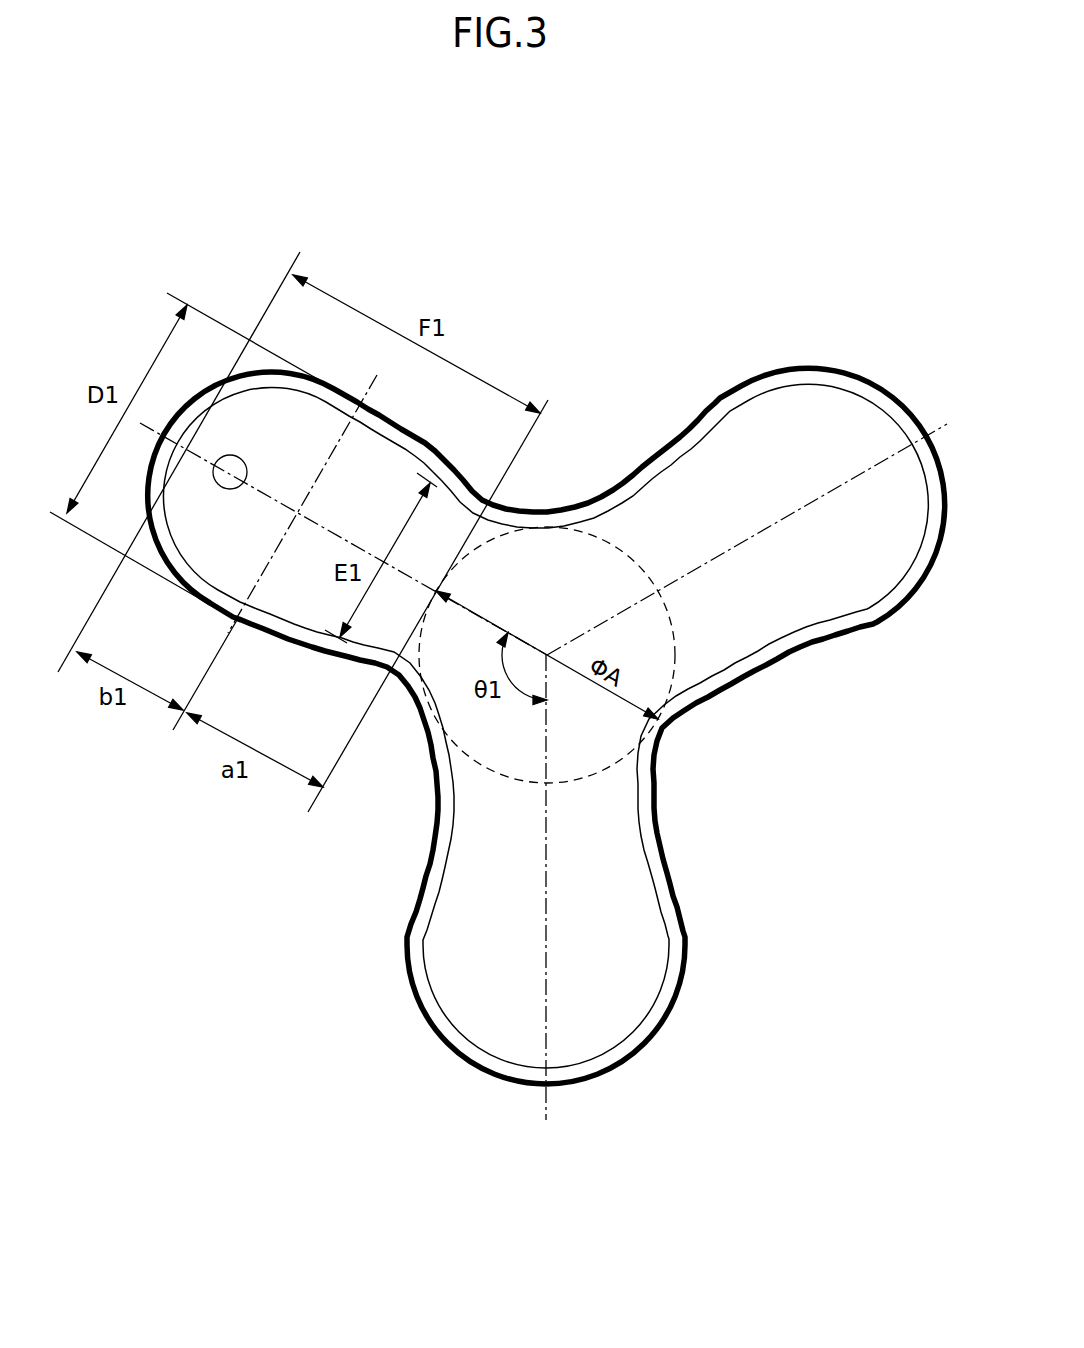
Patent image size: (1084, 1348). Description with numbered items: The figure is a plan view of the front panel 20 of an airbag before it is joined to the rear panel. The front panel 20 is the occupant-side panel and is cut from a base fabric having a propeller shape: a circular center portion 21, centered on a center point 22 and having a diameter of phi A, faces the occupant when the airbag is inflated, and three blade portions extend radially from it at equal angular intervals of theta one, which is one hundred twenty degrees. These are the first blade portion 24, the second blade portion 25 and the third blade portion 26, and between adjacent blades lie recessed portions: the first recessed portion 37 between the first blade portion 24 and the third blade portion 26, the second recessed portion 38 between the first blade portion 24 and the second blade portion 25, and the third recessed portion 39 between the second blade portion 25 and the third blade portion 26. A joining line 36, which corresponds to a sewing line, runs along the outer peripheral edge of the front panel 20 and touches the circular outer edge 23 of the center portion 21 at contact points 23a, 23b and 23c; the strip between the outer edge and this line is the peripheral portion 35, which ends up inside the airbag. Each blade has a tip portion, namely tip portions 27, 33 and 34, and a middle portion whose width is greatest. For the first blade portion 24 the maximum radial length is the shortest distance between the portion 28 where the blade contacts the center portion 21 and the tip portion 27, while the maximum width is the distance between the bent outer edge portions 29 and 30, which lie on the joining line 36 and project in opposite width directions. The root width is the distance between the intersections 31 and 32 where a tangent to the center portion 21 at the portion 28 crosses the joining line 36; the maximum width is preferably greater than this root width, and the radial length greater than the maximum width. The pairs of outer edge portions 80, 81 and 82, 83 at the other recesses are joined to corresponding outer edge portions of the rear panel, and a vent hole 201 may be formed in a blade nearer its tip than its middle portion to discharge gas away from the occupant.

The front panel 20 is at (240, 262).
The center portion 21 is at (602, 587).
The center point 22 is at (547, 652).
The circular outer edge 23 is at (628, 556).
The contact point 23a is at (550, 522).
The contact point 23b is at (435, 720).
The contact point 23c is at (662, 740).
The first blade portion 24 is at (282, 605).
The second blade portion 25 is at (477, 880).
The third blade portion 26 is at (862, 578).
The tip portion 27 is at (190, 448).
The portion where blade contacts center portion 28 is at (435, 588).
The outer edge portion 29 is at (360, 402).
The outer edge portion 30 is at (237, 625).
The intersection 31 is at (482, 512).
The intersection 32 is at (393, 670).
The tip portion 33 is at (537, 1085).
The tip portion 34 is at (903, 447).
The peripheral portion 35 is at (425, 458).
The joining line 36 is at (395, 420).
The first recessed portion 37 is at (541, 547).
The second recessed portion 38 is at (450, 712).
The third recessed portion 39 is at (655, 712).
The outer edge portion 80 is at (407, 937).
The outer edge portion 81 is at (685, 937).
The outer edge portion 82 is at (863, 617).
The outer edge portion 83 is at (718, 398).
The vent hole 201 is at (236, 456).